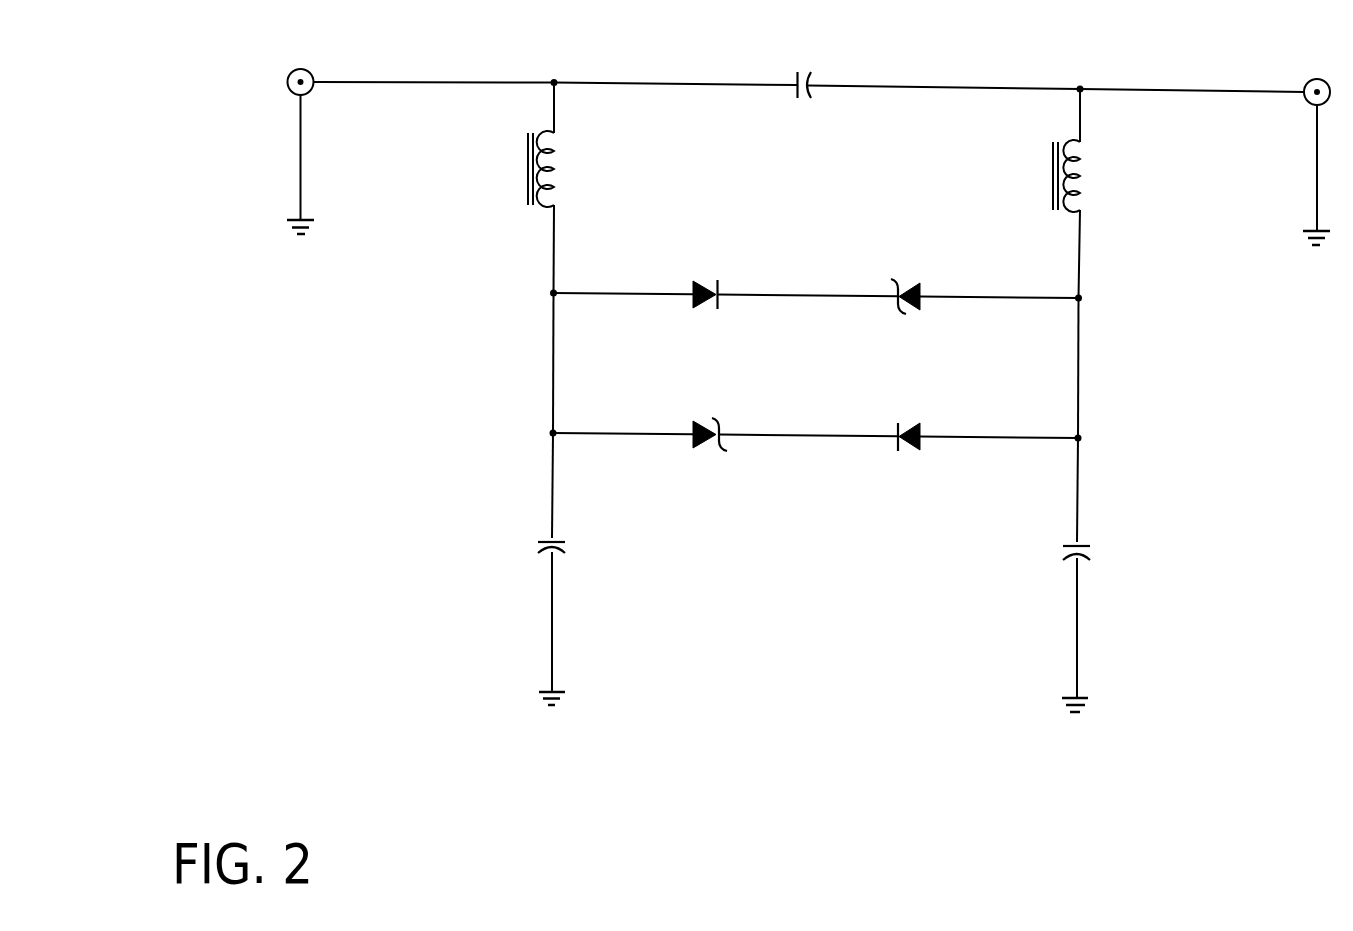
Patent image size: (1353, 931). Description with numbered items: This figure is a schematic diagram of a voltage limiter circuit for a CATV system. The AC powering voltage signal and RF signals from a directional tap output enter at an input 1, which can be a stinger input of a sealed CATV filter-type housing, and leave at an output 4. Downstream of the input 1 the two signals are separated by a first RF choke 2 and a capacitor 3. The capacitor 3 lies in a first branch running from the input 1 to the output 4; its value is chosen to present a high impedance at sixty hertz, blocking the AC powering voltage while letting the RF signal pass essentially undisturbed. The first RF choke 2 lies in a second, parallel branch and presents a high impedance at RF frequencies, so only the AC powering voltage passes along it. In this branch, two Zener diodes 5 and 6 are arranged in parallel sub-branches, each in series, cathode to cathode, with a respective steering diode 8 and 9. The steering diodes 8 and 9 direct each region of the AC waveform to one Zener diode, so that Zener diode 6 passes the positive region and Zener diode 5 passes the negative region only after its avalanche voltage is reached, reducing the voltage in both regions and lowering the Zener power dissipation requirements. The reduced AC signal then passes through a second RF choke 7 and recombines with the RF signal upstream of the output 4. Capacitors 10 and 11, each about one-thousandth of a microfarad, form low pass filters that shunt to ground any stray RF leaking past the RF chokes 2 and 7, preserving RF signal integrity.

The input 1 is at (300, 131).
The first RF choke 2 is at (524, 169).
The capacitor 3 is at (808, 65).
The output 4 is at (1316, 144).
The Zener diode 5 is at (709, 422).
The Zener diode 6 is at (906, 316).
The second RF choke 7 is at (1050, 176).
The steering diode 8 is at (909, 459).
The steering diode 9 is at (704, 277).
The capacitor 10 is at (575, 618).
The capacitor 11 is at (1100, 626).